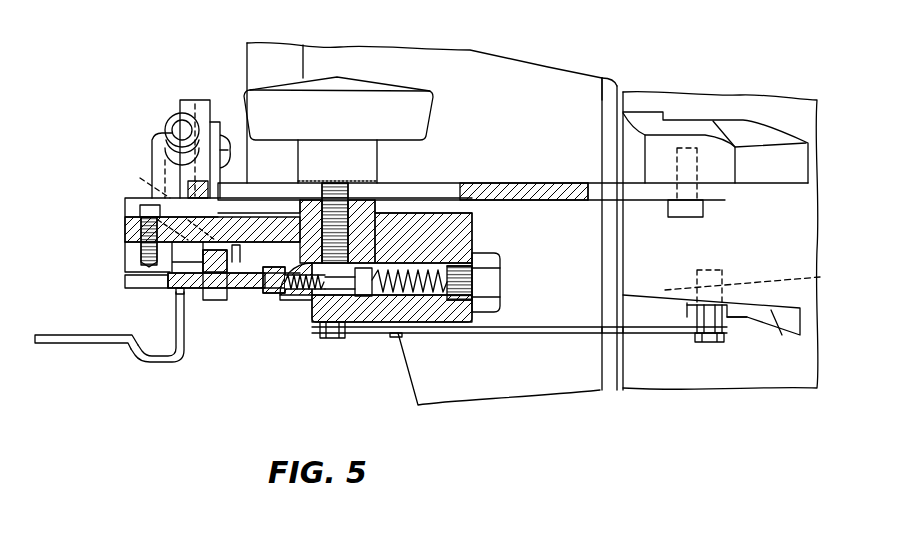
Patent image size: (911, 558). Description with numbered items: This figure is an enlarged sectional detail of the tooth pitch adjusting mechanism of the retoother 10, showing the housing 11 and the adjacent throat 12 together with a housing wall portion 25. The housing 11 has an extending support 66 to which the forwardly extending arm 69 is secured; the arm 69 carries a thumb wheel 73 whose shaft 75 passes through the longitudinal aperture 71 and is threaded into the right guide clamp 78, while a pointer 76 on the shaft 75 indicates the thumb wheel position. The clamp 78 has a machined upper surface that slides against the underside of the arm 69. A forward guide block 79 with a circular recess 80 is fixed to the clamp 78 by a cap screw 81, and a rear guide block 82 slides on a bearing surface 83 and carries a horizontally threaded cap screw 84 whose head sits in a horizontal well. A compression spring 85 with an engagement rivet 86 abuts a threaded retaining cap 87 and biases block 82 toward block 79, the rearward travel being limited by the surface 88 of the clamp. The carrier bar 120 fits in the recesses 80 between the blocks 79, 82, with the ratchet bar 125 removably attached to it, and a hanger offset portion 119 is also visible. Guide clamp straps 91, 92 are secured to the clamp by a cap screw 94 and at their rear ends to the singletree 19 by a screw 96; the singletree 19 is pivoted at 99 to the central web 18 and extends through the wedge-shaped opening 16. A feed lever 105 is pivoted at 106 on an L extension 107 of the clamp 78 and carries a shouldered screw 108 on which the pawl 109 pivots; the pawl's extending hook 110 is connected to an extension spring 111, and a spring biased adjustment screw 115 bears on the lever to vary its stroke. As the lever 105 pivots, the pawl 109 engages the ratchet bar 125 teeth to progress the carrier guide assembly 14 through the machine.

The retoother 10 is at (574, 63).
The housing 11 is at (751, 97).
The throat 12 is at (477, 53).
The carrier guide assembly 14 is at (99, 347).
The wedge-shaped openings 16 is at (657, 298).
The central web 18 is at (766, 283).
The singletree 19 is at (728, 321).
The housing wall 25 is at (263, 52).
The extending support 66 is at (706, 122).
The arm 69 is at (505, 183).
The longitudinal aperture 71 is at (445, 193).
The thumb wheel 73 is at (398, 100).
The shaft 75 is at (336, 193).
The pointer 76 is at (385, 183).
The right guide clamp 78 is at (466, 233).
The forward guide block 79 is at (123, 253).
The circular recess 80 is at (125, 280).
The cap screw 81 is at (148, 206).
The rear guide block 82 is at (268, 294).
The bearing surface 83 is at (256, 268).
The cap screw 84 is at (364, 300).
The compression spring 85 is at (428, 296).
The engagement rivet 86 is at (374, 303).
The threaded retaining cap 87 is at (500, 281).
The surface 88 is at (311, 300).
The guide clamp strap 91 is at (580, 334).
The guide clamp strap 92 is at (507, 334).
The cap screw 94 is at (335, 339).
The screw 96 is at (708, 343).
The pivot 99 is at (712, 273).
The feed lever 105 is at (196, 112).
The pivot 106 is at (222, 130).
The L extension 107 is at (152, 158).
The shouldered screw 108 is at (138, 176).
The pawl 109 is at (140, 232).
The extending hook 110 is at (213, 275).
The extension spring 111 is at (248, 266).
The spring biased adjustment screw 115 is at (172, 121).
The offset portion 119 is at (160, 358).
The carrier bar 120 is at (176, 292).
The ratchet bar 125 is at (223, 272).